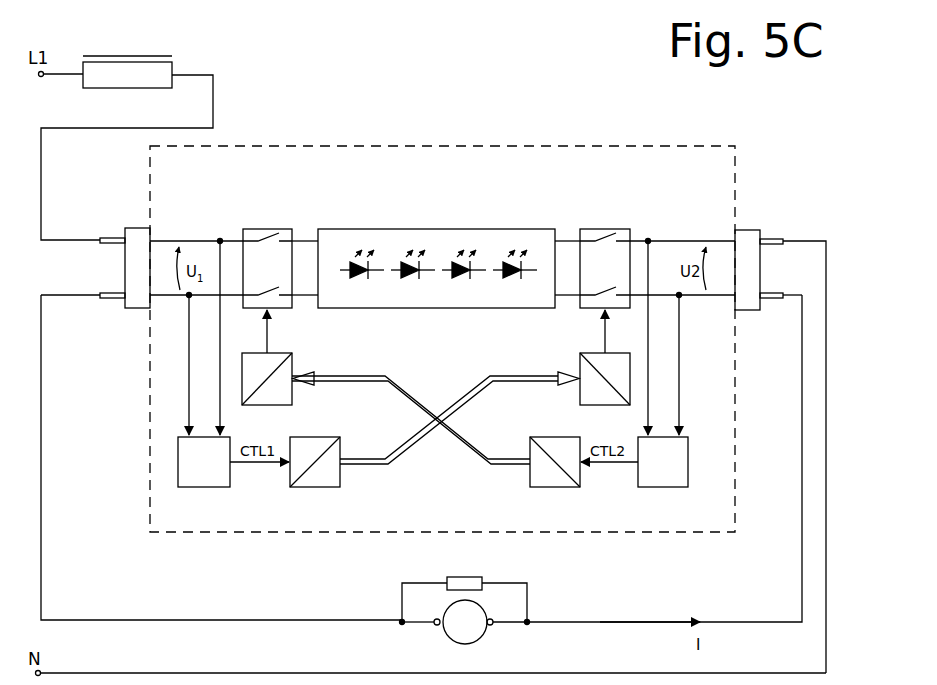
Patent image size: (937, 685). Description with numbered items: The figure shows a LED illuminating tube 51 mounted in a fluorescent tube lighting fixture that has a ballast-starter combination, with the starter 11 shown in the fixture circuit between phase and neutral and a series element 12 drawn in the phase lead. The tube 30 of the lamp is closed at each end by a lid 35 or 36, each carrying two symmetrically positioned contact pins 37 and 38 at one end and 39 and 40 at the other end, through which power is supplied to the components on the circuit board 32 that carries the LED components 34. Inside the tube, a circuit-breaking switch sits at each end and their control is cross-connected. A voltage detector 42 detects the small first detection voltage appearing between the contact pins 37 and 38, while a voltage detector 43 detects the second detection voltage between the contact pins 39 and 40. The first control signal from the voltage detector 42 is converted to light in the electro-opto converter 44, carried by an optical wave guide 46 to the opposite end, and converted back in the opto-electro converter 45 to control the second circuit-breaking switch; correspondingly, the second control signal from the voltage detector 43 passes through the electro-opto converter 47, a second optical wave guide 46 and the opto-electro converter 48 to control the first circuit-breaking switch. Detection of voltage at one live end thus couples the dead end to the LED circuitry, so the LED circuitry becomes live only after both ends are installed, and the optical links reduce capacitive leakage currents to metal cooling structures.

The starter 11 is at (448, 641).
The fuse/inductor element 12 is at (128, 90).
The tube 30 is at (547, 146).
The circuit board 32 is at (436, 291).
The LED components 34 is at (361, 278).
The lid 35 is at (132, 228).
The lid 36 is at (750, 230).
The contact pin 37 is at (105, 238).
The contact pin 38 is at (108, 298).
The contact pin 39 is at (777, 239).
The contact pin 40 is at (772, 300).
The voltage detector 42 is at (205, 488).
The voltage detector 43 is at (660, 488).
The electro-opto converter 44 is at (318, 488).
The opto-electro converter 45 is at (592, 352).
The optical wave guide 46 is at (432, 374).
The electro-opto converter 47 is at (552, 488).
The opto-electro converter 48 is at (265, 350).
The LED illuminating tube 51 is at (472, 132).